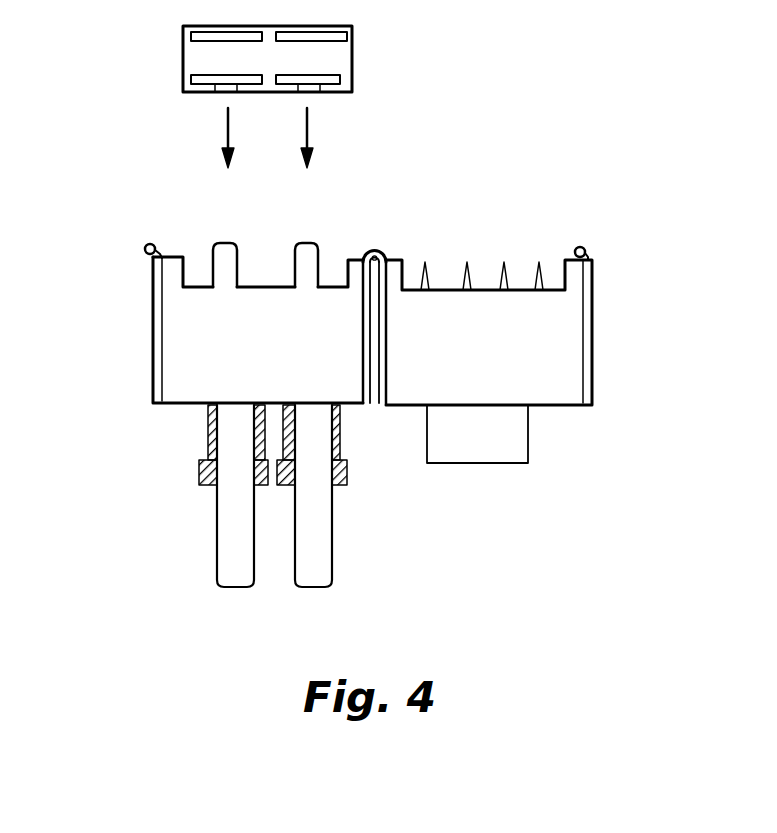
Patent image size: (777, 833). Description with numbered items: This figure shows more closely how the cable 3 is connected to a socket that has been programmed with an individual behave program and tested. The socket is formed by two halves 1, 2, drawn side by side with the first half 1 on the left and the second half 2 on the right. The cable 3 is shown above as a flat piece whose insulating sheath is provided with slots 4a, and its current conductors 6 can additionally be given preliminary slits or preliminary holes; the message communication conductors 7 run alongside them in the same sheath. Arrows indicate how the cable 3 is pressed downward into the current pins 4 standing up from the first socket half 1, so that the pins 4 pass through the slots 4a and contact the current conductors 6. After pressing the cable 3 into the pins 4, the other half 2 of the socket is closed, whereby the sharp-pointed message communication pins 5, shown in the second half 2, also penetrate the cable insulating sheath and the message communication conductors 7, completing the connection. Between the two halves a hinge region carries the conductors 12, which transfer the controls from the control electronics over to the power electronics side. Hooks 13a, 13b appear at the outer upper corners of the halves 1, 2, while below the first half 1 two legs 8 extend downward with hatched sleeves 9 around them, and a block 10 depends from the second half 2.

The socket half 1 is at (130, 323).
The socket half 2 is at (612, 333).
The cable 3 is at (196, 109).
The current pins 4 is at (305, 255).
The slots 4a is at (317, 90).
The message communication pins 5 is at (540, 262).
The current conductors 6 is at (298, 82).
The message communication conductors 7 is at (215, 38).
The legs 8 is at (232, 537).
The sleeves 9 is at (210, 446).
The block 10 is at (530, 440).
The conductors 12 is at (367, 286).
The latch hook 13a is at (146, 245).
The latch hook 13b is at (586, 249).